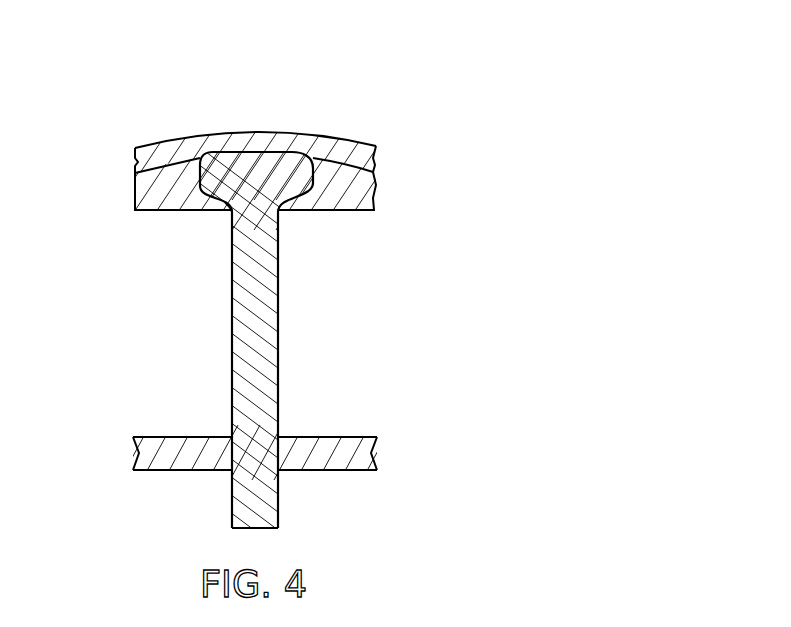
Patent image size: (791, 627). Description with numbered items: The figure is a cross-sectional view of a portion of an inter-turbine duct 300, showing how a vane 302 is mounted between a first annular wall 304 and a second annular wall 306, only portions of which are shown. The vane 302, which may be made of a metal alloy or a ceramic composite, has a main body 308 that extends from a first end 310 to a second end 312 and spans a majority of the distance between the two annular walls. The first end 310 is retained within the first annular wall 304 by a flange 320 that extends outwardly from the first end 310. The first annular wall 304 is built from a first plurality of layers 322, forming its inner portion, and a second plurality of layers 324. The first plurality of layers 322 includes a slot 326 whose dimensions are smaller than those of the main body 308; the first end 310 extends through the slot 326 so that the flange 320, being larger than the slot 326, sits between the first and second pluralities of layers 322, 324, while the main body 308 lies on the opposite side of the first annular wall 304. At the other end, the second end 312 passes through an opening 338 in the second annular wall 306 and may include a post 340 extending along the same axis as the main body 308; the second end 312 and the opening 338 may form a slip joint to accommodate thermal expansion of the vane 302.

The inter-turbine duct 300 is at (357, 110).
The vane 302 is at (256, 340).
The first annular wall 304 is at (150, 162).
The second annular wall 306 is at (150, 452).
The main body 308 is at (247, 278).
The first end 310 is at (257, 168).
The second end 312 is at (267, 518).
The flange 320 is at (218, 163).
The first plurality of layers 322 is at (145, 190).
The second plurality of layers 324 is at (172, 147).
The slot 326 is at (231, 211).
The opening 338 is at (232, 457).
The post 340 is at (265, 495).